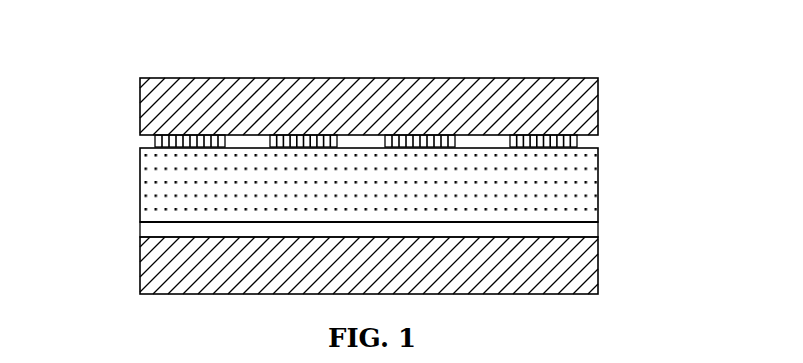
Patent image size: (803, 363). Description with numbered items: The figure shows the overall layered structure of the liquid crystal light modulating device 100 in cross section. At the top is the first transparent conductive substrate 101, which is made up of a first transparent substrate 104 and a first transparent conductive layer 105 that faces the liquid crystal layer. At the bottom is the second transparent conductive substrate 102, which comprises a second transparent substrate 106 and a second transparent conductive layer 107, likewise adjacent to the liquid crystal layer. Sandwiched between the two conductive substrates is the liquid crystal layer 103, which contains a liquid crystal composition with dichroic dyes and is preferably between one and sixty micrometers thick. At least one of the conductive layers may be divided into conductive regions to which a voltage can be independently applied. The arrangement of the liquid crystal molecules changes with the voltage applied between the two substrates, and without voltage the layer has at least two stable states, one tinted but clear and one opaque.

The light modulating device 100 is at (433, 72).
The first transparent conductive substrate 101 is at (128, 125).
The second transparent conductive substrate 102 is at (128, 250).
The liquid crystal layer 103 is at (553, 197).
The first transparent substrate 104 is at (573, 110).
The first transparent conductive layer 105 is at (578, 142).
The second transparent substrate 106 is at (563, 267).
The second transparent conductive layer 107 is at (572, 229).